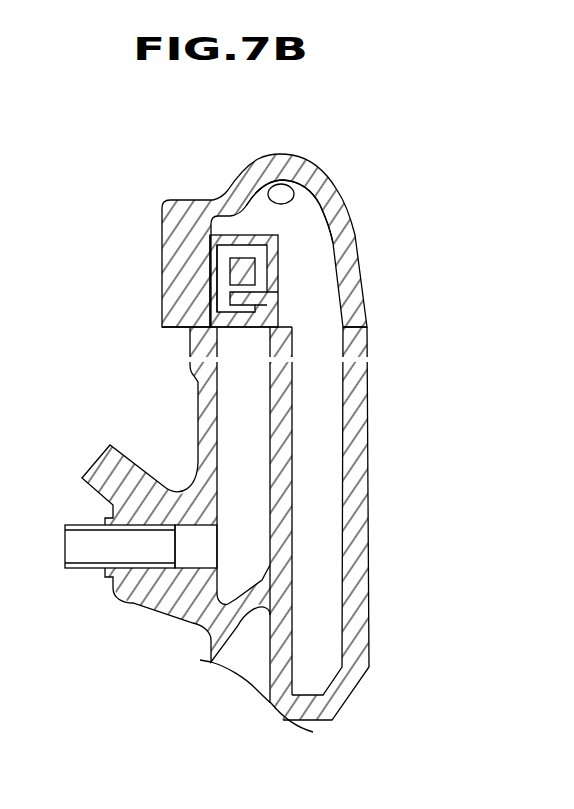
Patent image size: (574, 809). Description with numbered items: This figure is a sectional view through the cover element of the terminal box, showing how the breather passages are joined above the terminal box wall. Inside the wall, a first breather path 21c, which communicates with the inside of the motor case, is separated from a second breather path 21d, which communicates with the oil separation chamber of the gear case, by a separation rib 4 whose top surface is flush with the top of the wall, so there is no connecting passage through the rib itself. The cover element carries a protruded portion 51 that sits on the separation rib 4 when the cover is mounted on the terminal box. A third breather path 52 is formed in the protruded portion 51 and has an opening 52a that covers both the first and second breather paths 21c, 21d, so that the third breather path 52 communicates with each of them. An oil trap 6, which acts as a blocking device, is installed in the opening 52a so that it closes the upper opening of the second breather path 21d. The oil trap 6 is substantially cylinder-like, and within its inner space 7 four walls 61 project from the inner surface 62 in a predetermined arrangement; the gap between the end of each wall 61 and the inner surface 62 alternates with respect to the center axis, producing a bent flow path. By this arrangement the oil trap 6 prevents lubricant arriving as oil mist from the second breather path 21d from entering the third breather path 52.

The separation rib 4 is at (277, 413).
The oil trap 6 is at (269, 262).
The inner space 7 is at (245, 268).
The first breather path 21c is at (323, 503).
The second breather path 21d is at (237, 453).
The protruded portion 51 is at (246, 178).
The third breather path 52 is at (297, 183).
The opening 52a is at (296, 240).
The wall 61 is at (215, 238).
The inner surface 62 is at (262, 304).